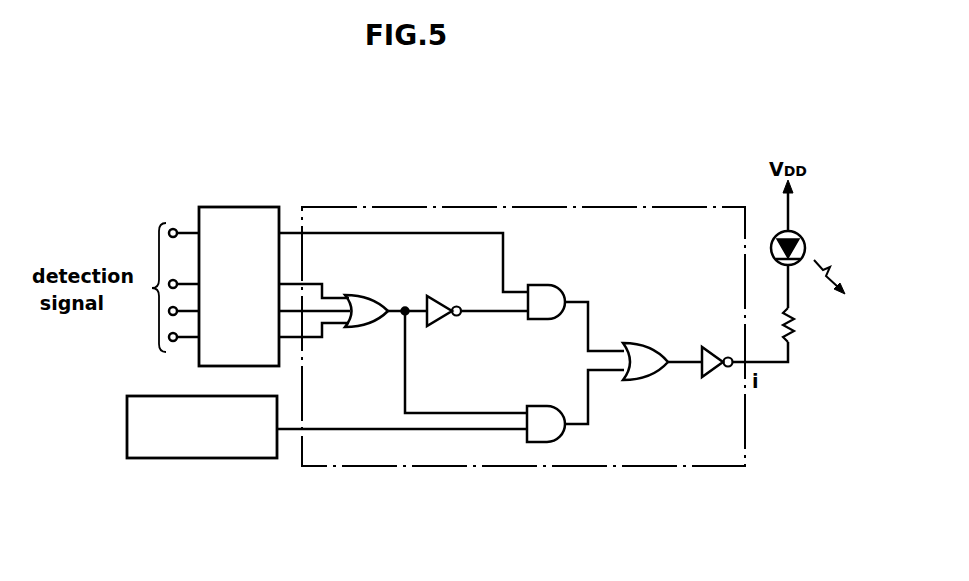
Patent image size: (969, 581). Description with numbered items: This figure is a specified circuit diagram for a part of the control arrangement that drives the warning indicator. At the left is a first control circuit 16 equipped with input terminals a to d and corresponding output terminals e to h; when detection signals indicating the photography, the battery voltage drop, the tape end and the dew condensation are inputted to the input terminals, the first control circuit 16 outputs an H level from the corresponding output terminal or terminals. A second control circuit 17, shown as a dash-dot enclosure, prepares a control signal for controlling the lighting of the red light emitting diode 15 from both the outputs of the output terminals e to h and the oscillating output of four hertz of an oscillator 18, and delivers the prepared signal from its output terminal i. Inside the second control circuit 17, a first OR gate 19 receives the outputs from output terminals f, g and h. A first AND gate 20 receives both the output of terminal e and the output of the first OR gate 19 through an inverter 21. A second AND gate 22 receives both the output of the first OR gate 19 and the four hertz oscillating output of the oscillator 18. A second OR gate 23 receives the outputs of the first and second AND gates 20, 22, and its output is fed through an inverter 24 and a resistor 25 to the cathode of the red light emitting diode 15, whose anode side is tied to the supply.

The red light emitting diode 15 is at (800, 236).
The first control circuit 16 is at (247, 207).
The second control circuit 17 is at (568, 207).
The oscillator 18 is at (217, 458).
The first OR gate 19 is at (362, 300).
The first AND gate 20 is at (548, 293).
The inverter 21 is at (441, 305).
The second AND gate 22 is at (541, 420).
The second OR gate 23 is at (643, 355).
The inverter 24 is at (710, 355).
The resistor 25 is at (794, 325).